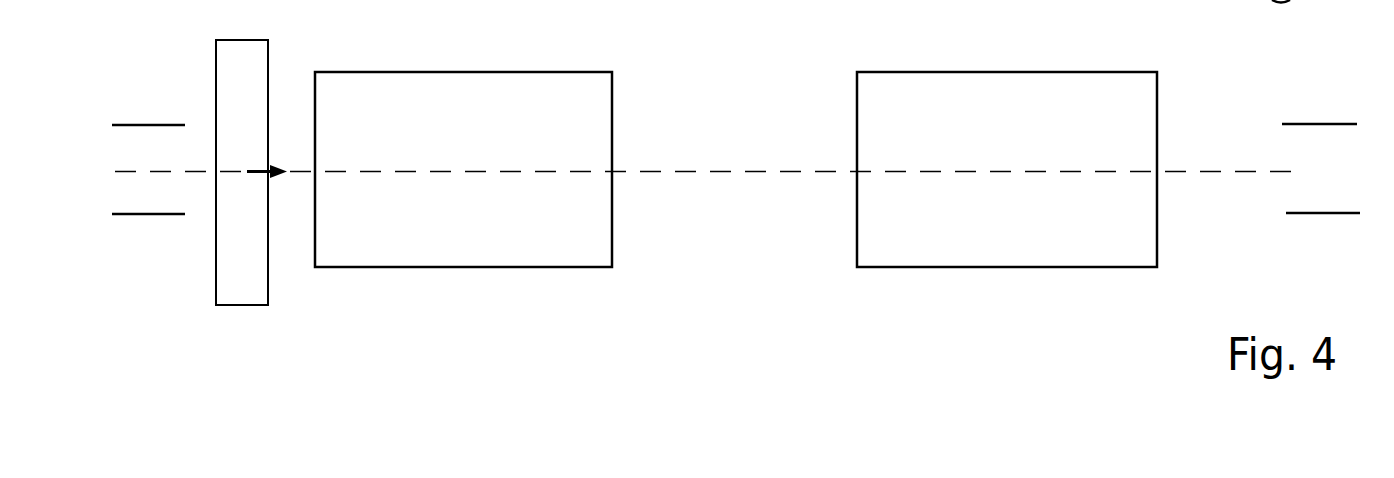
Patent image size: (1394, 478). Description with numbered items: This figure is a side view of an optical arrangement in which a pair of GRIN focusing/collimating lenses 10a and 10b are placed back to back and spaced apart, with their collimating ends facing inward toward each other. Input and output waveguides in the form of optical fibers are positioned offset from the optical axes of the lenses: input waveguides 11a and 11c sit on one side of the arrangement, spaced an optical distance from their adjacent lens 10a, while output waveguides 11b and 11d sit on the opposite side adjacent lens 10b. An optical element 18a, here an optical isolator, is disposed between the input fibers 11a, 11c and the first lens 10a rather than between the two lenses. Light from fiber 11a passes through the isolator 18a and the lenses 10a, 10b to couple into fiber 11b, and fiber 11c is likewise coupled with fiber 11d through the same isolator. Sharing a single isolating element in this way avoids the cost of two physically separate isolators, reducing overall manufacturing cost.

The focusing/collimating lens 10a is at (493, 88).
The focusing/collimating lens 10b is at (1029, 83).
The input waveguide 11a is at (163, 125).
The output waveguide 11b is at (1312, 213).
The input waveguide 11c is at (147, 214).
The output waveguide 11d is at (1308, 123).
The optical element 18a is at (242, 57).